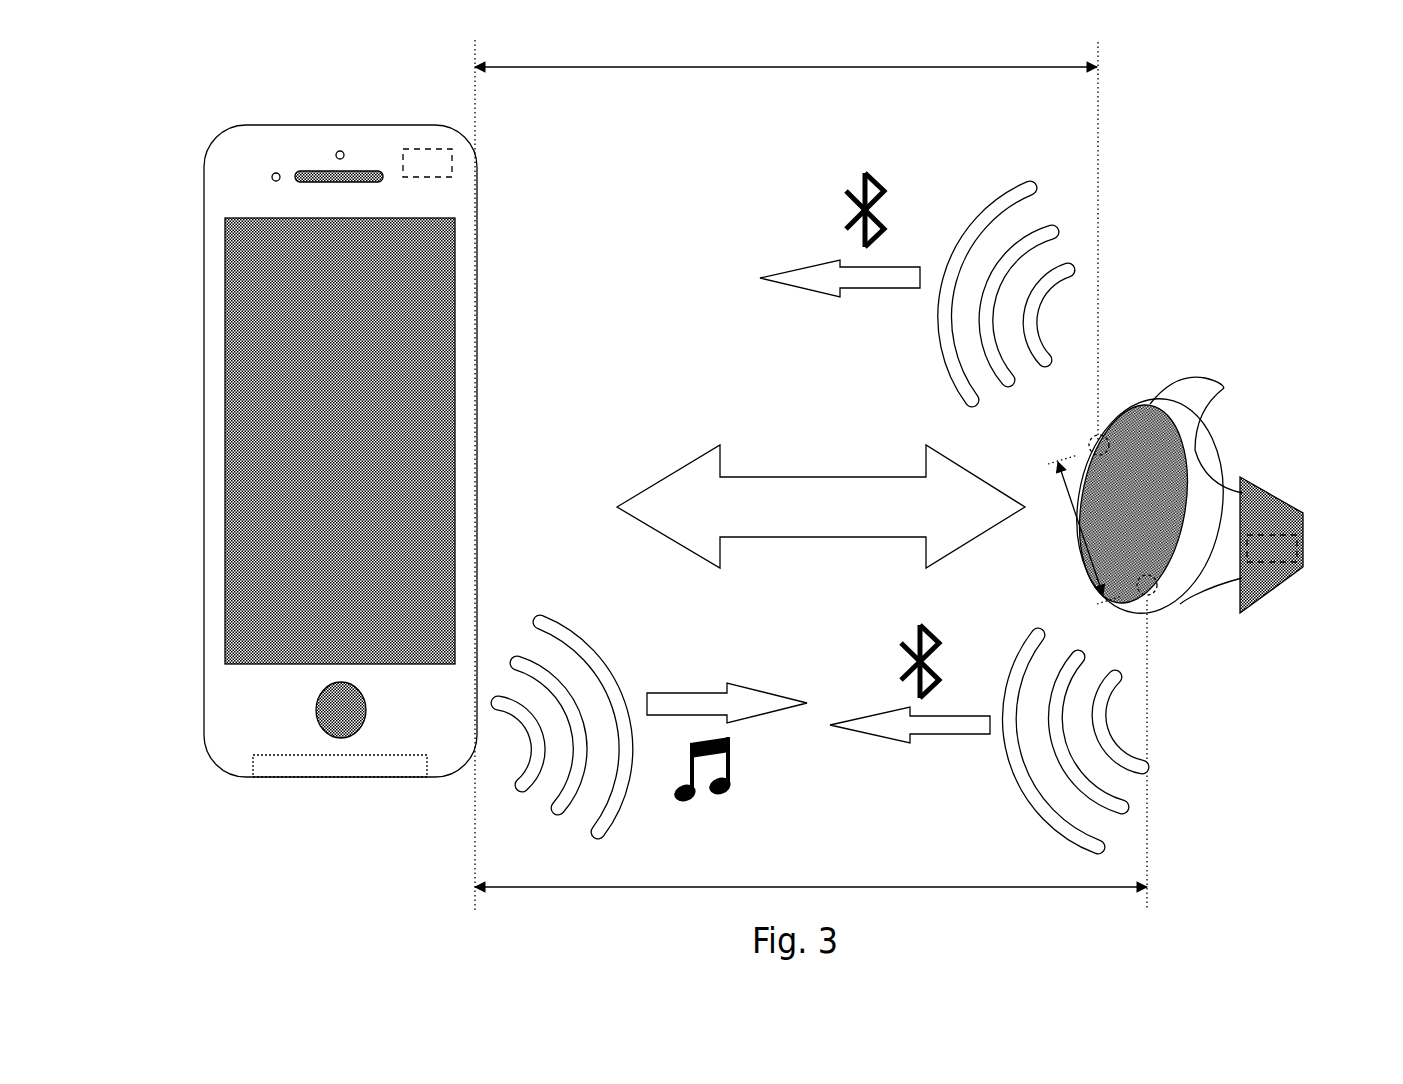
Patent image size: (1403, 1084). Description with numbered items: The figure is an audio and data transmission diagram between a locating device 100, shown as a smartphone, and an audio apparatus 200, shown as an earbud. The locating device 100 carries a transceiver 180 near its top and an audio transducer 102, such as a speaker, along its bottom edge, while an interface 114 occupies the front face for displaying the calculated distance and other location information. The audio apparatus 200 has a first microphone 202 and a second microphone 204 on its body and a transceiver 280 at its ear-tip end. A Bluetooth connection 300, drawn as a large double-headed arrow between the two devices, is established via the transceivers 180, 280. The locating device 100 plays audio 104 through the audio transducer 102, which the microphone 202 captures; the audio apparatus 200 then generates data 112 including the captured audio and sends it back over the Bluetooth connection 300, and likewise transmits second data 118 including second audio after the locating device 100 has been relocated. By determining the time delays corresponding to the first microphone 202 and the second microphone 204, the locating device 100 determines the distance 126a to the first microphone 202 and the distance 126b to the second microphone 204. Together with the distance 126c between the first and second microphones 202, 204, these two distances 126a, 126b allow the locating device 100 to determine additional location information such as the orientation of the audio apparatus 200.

The locating device 100 is at (329, 446).
The audio transducer 102 is at (316, 755).
The audio 104 is at (614, 658).
The data 112 is at (1016, 791).
The interface 114 is at (357, 452).
The second data 118 is at (930, 373).
The distance to the first microphone 126a is at (913, 903).
The distance to the second microphone 126b is at (913, 83).
The distance between the first and second microphones 126c is at (1080, 564).
The transceiver 180 is at (452, 152).
The audio apparatus 200 is at (1227, 503).
The microphone 202 is at (1147, 597).
The second microphone 204 is at (1100, 434).
The transceiver 280 is at (1297, 537).
The Bluetooth connection 300 is at (839, 519).